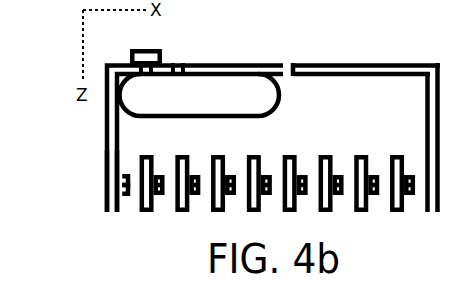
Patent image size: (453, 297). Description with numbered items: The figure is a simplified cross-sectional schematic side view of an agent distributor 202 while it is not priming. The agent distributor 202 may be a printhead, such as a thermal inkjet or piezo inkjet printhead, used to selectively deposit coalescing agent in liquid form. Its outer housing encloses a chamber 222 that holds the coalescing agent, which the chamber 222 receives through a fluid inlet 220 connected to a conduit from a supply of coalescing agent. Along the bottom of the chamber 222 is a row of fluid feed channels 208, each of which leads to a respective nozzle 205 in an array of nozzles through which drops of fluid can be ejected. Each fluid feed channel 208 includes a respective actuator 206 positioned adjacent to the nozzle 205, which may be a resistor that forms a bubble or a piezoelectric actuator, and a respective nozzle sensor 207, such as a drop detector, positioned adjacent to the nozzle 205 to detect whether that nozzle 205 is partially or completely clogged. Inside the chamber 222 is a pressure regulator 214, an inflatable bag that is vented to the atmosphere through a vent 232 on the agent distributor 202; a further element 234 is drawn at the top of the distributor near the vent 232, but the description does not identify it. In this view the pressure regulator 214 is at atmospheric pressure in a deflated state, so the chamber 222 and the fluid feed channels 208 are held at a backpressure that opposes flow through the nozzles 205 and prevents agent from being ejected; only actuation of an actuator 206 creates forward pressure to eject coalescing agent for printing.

The agent distributor 202 is at (342, 64).
The nozzle 205 is at (120, 212).
The actuator 206 is at (121, 184).
The nozzle sensor 207 is at (119, 191).
The fluid feed channel 208 is at (136, 163).
The pressure regulator 214 is at (224, 78).
The fluid inlet 220 is at (289, 62).
The chamber 222 is at (401, 90).
The vent 232 is at (178, 61).
The inlet port 234 is at (138, 50).